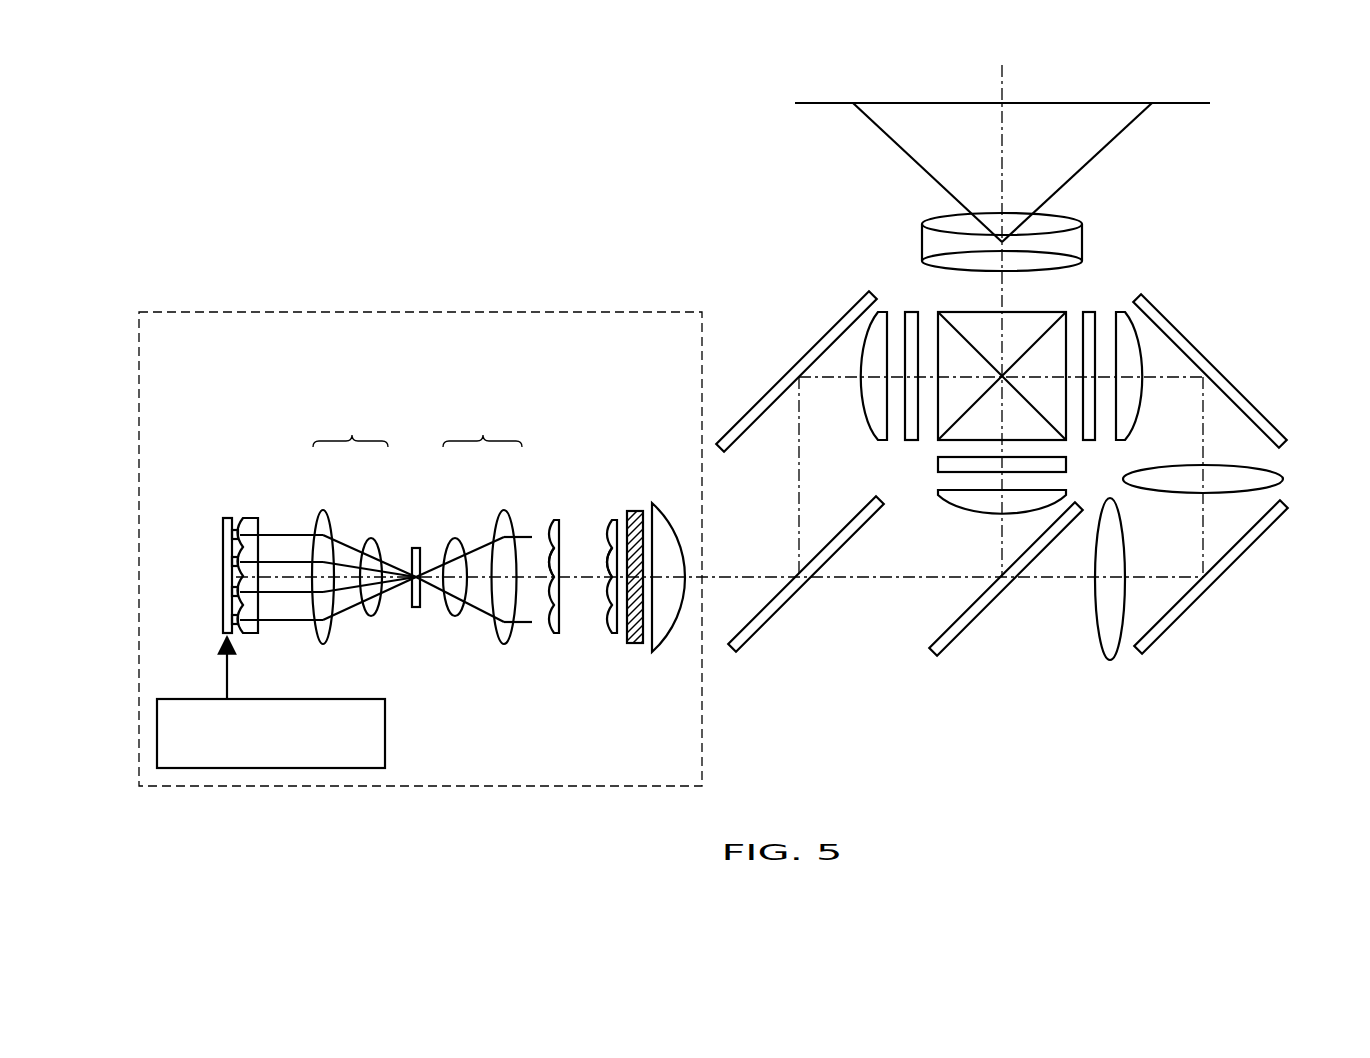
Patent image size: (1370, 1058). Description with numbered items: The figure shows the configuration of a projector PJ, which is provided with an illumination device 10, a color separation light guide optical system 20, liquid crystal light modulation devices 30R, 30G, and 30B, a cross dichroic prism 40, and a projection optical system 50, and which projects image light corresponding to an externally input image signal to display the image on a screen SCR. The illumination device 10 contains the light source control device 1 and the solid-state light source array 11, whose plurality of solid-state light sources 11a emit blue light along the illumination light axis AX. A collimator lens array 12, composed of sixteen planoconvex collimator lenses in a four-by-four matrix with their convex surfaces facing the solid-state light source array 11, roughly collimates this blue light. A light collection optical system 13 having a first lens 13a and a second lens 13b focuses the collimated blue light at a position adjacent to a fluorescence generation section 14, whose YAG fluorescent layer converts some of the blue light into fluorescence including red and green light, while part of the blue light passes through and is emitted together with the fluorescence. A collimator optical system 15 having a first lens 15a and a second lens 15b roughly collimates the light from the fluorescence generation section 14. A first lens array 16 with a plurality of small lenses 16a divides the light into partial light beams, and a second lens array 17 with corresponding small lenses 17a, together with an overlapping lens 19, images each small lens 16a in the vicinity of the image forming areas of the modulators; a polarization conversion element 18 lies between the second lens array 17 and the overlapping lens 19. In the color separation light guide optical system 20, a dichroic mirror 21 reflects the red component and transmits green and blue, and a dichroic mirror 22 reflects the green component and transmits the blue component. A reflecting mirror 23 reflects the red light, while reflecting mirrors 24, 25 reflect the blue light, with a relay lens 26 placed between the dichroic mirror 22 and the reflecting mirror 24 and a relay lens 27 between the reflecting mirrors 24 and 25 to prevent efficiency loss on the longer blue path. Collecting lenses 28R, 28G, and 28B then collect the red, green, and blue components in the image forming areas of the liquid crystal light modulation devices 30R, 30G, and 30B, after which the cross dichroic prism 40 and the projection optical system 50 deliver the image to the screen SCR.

The projector PJ is at (541, 226).
The light source control device 1 is at (388, 731).
The illumination device 10 is at (427, 310).
The solid-state light source array 11 is at (228, 516).
The solid-state light sources 11a is at (236, 630).
The collimator lens array 12 is at (250, 516).
The light collection optical system 13 is at (353, 525).
The first lens 13a is at (325, 511).
The second lens 13b is at (371, 537).
The fluorescence generation section 14 is at (416, 546).
The collimator optical system 15 is at (484, 525).
The first lens 15a is at (455, 537).
The second lens 15b is at (504, 509).
The first lens array 16 is at (556, 518).
The small lenses 16a is at (551, 635).
The second lens array 17 is at (610, 518).
The small lenses 17a is at (607, 635).
The polarization conversion element 18 is at (635, 509).
The overlapping lens 19 is at (660, 503).
The color separation light guide optical system 20 is at (1035, 708).
The dichroic mirror 21 is at (760, 634).
The dichroic mirror 22 is at (962, 634).
The reflecting mirror 23 is at (752, 405).
The reflecting mirror 24 is at (1165, 636).
The reflecting mirror 25 is at (1258, 413).
The relay lens 26 is at (1110, 662).
The relay lens 27 is at (1285, 479).
The collecting lens 28R is at (875, 300).
The collecting lens 28G is at (940, 493).
The collecting lens 28B is at (1135, 300).
The liquid crystal light modulation device 30R is at (912, 310).
The liquid crystal light modulation device 30G is at (937, 465).
The liquid crystal light modulation device 30B is at (1090, 310).
The cross dichroic prism 40 is at (1015, 310).
The projection optical system 50 is at (1082, 233).
The screen SCR is at (1185, 106).
The illumination light axis AX is at (745, 577).